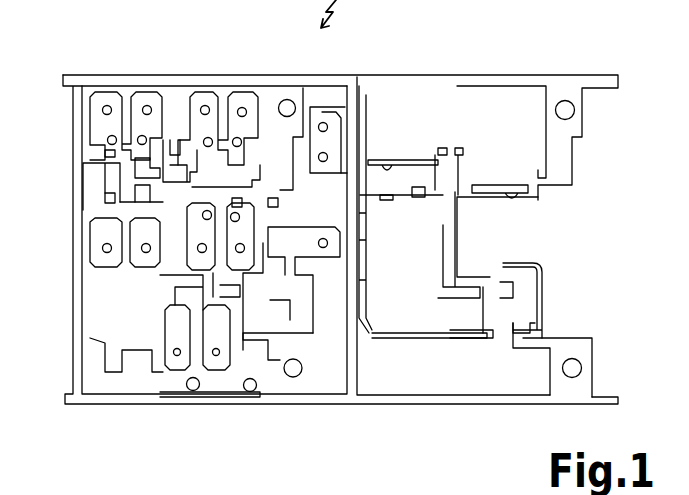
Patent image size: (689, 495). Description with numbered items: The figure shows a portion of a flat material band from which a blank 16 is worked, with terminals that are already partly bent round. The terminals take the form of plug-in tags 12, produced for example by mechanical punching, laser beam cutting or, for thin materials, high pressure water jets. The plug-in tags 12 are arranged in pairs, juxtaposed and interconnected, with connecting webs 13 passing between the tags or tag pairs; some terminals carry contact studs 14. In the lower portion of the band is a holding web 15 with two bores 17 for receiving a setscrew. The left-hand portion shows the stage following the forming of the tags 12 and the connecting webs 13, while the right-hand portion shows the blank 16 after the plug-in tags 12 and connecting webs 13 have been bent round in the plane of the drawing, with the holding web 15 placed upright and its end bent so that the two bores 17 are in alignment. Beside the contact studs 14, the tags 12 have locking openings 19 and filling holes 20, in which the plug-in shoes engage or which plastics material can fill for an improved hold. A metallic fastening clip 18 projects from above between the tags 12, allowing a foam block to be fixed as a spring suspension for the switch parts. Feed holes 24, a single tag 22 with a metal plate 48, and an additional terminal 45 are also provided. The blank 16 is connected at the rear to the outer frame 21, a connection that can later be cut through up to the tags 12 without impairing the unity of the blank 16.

The plug-in tags 12 is at (112, 92).
The connecting webs 13 is at (223, 175).
The contact studs 14 is at (273, 203).
The holding web 15 is at (225, 404).
The blank 16 is at (589, 206).
The bores 17 is at (187, 402).
The fastening clip 18 is at (173, 175).
The locking openings 19 is at (245, 110).
The filling holes 20 is at (112, 140).
The outer frame 21 is at (506, 76).
The single tag 22 is at (315, 257).
The feed holes 24 is at (565, 100).
The additional terminal 45 is at (337, 112).
The metal plate 48 is at (278, 295).